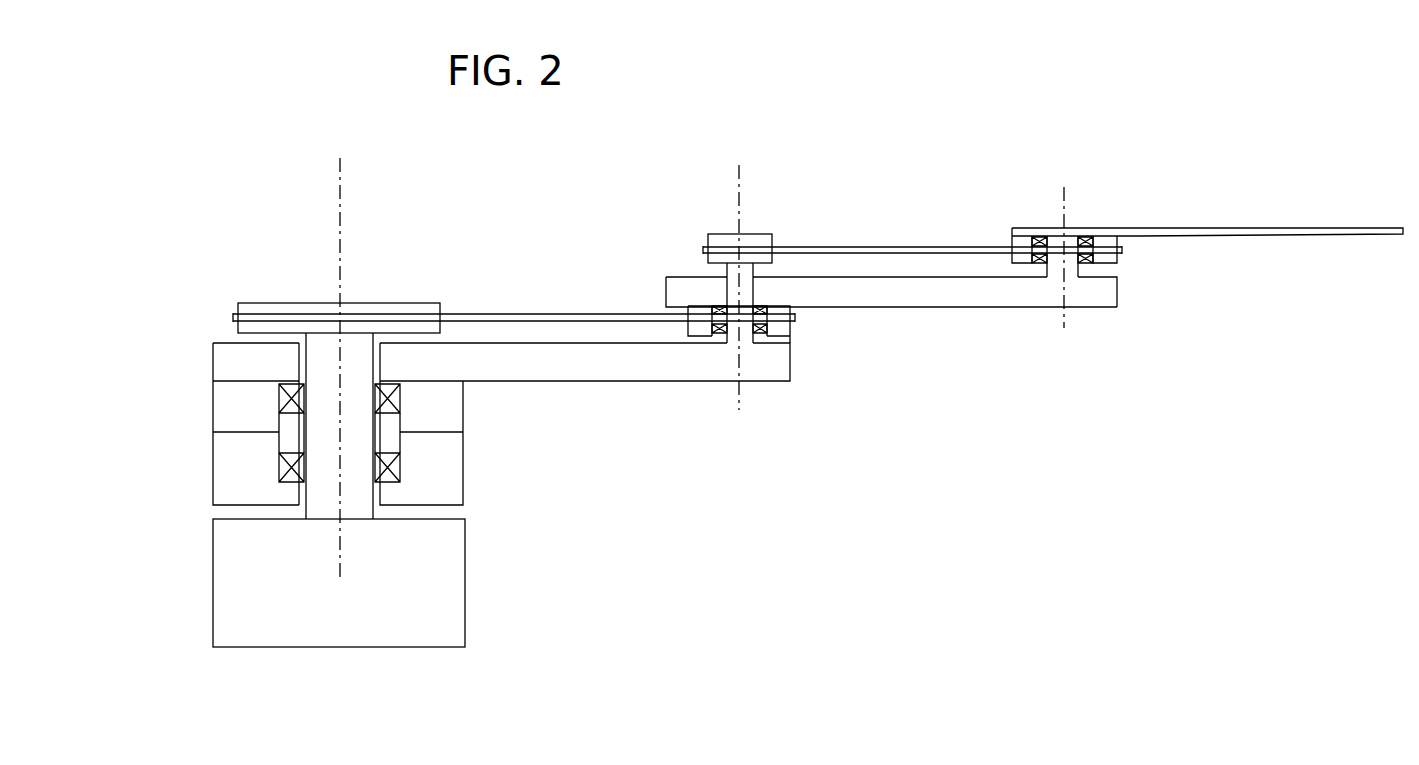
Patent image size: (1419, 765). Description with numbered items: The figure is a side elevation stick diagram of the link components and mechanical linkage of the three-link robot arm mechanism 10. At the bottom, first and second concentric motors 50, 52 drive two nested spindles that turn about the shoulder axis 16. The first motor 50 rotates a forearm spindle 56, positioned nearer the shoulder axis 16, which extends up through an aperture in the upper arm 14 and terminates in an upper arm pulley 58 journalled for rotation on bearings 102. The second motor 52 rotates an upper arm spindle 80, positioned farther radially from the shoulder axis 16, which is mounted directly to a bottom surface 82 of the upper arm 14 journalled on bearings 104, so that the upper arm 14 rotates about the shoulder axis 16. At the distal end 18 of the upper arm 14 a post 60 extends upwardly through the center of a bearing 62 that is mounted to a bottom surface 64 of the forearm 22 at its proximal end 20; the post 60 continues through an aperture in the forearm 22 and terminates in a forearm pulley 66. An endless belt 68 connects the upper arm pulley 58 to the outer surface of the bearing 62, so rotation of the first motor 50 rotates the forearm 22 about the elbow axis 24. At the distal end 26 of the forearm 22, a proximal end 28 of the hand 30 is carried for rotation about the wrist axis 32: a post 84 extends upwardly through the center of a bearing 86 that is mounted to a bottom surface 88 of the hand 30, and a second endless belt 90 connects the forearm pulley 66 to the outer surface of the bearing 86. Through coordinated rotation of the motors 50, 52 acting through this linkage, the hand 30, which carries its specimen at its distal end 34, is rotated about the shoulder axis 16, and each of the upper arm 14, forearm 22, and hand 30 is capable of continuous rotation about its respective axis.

The robot arm mechanism 10 is at (590, 581).
The upper arm 14 is at (645, 373).
The shoulder axis 16 is at (345, 173).
The distal end of upper arm 18 is at (790, 375).
The proximal end of forearm 20 is at (668, 290).
The forearm 22 is at (843, 300).
The elbow axis 24 is at (744, 185).
The distal end of forearm 26 is at (1118, 293).
The proximal end of hand 28 is at (1012, 238).
The hand 30 is at (1228, 230).
The wrist axis 32 is at (1068, 207).
The distal end of hand 34 is at (1405, 236).
The first motor 50 is at (465, 578).
The second motor 52 is at (463, 465).
The forearm spindle 56 is at (313, 422).
The upper arm pulley 58 is at (243, 308).
The post 60 is at (732, 297).
The bearing 62 is at (700, 325).
The bottom surface of forearm 64 is at (992, 307).
The forearm pulley 66 is at (716, 238).
The endless belt 68 is at (592, 312).
The upper arm spindle 80 is at (463, 408).
The bottom surface of upper arm 82 is at (575, 383).
The post 84 is at (1050, 268).
The bearing 86 is at (1020, 243).
The bottom surface of hand 88 is at (1210, 238).
The endless belt 90 is at (868, 247).
The bearings 102 is at (280, 468).
The bearings 104 is at (280, 398).